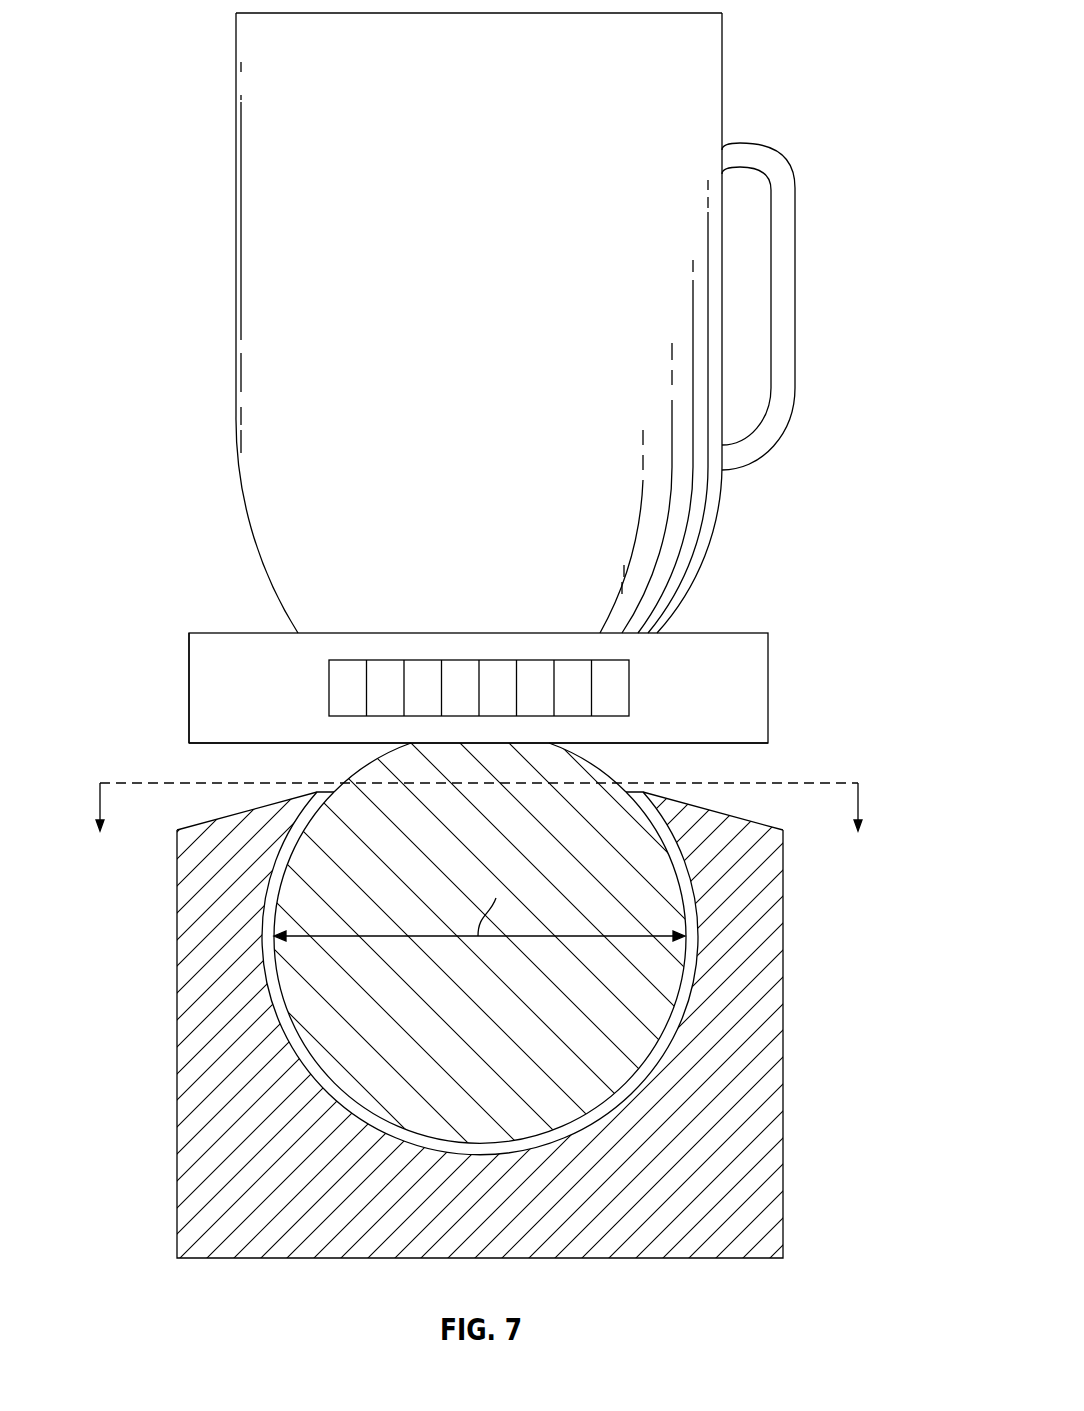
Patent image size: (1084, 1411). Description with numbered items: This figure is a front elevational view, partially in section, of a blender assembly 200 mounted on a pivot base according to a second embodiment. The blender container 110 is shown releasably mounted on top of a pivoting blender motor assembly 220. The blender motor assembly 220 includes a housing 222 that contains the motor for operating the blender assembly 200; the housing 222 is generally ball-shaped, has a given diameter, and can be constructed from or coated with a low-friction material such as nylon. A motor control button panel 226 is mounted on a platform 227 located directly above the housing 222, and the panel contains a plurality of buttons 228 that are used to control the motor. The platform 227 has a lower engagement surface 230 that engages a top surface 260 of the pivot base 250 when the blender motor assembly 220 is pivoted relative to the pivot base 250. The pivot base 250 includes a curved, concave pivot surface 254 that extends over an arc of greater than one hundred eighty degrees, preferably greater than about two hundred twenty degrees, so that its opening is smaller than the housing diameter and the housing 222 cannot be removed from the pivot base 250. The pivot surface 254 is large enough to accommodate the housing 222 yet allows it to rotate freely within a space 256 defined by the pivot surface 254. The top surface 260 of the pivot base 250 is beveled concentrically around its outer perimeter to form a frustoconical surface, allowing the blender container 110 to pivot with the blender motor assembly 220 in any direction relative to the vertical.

The blender assembly 200 is at (836, 33).
The blender container 110 is at (236, 362).
The blender motor assembly 220 is at (768, 687).
The housing 222 is at (355, 774).
The motor control button panel 226 is at (630, 686).
The platform 227 is at (189, 688).
The buttons 228 is at (346, 660).
The lower engagement surface 230 is at (696, 743).
The pivot base 250 is at (783, 1092).
The pivot surface 254 is at (262, 939).
The space 256 is at (273, 993).
The top surface 260 is at (198, 824).